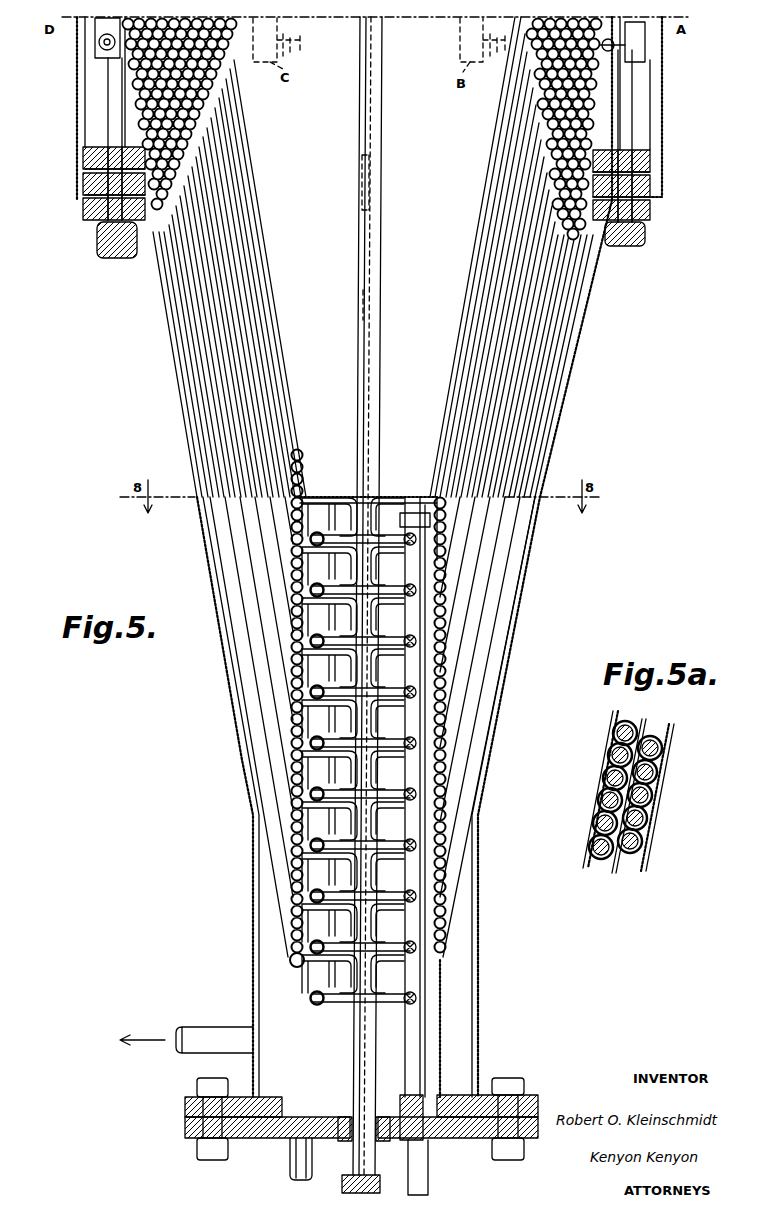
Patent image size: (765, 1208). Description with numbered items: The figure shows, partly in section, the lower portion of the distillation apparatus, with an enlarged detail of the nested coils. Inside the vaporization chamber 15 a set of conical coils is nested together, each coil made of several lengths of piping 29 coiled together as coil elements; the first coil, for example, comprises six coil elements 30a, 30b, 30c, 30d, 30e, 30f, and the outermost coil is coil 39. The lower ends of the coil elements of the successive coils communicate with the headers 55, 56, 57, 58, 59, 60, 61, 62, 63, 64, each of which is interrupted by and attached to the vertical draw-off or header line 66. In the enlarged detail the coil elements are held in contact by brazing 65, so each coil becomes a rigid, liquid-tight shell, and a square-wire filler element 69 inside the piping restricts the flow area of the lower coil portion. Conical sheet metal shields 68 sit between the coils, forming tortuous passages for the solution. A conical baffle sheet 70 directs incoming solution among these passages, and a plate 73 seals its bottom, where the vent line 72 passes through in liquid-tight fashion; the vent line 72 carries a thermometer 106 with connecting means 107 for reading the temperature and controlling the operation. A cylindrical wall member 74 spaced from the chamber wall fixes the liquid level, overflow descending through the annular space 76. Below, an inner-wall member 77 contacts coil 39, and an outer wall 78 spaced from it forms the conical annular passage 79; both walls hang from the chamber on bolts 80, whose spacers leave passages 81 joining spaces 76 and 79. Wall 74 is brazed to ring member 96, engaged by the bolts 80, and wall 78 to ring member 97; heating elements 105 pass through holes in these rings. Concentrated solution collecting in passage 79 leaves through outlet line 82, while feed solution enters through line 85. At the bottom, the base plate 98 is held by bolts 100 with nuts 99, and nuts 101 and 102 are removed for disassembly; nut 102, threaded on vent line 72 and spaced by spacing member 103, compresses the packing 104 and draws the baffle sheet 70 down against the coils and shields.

In FIG. 5, the vaporization chamber 15 is at (663, 99).
In FIG. 5A, the piping 29 is at (620, 726).
In FIG. 5, the coil element 30a is at (300, 450).
In FIG. 5, the coil element 30b is at (300, 462).
In FIG. 5, the coil element 30c is at (300, 474).
In FIG. 5, the coil element 30d is at (300, 486).
In FIG. 5, the coil element 30e is at (301, 498).
In FIG. 5, the coil element 30f is at (302, 510).
In FIG. 5, the conical coil 39 is at (135, 82).
In FIG. 5, the header 55 is at (312, 540).
In FIG. 5, the header 56 is at (312, 591).
In FIG. 5, the header 57 is at (312, 642).
In FIG. 5, the header 58 is at (312, 693).
In FIG. 5, the header 59 is at (312, 744).
In FIG. 5, the header 60 is at (312, 795).
In FIG. 5, the header 61 is at (312, 846).
In FIG. 5, the header 62 is at (312, 896).
In FIG. 5, the header 63 is at (312, 947).
In FIG. 5, the header 64 is at (312, 998).
In FIG. 5A, the brazing 65 is at (614, 770).
In FIG. 5, the vertical draw-off or header line 66 is at (413, 1022).
In FIG. 5, the conically-shaped sheet metal spacing means (shield) 68 is at (205, 428).
In FIG. 5A, the conically-shaped sheet metal spacing means (shield) 68 is at (655, 796).
In FIG. 5A, the filler element 69 is at (668, 735).
In FIG. 5, the baffle sheet 70 is at (478, 238).
In FIG. 5, the vent line 72 is at (382, 122).
In FIG. 5, the plate 73 is at (390, 497).
In FIG. 5, the cylindrical wall member 74 is at (652, 95).
In FIG. 5, the annular space 76 is at (660, 62).
In FIG. 5, the inner-wall member 77 is at (563, 346).
In FIG. 5, the outer wall 78 is at (558, 387).
In FIG. 5, the annular conically-shaped passage 79 is at (553, 414).
In FIG. 5, the bolt 80 is at (622, 232).
In FIG. 5, the passage 81 is at (640, 180).
In FIG. 5, the outlet line 82 is at (200, 1030).
In FIG. 5, the line 85 is at (294, 1160).
In FIG. 5, the ring member 96 is at (628, 150).
In FIG. 5, the ring member 97 is at (652, 209).
In FIG. 5, the base plate 98 is at (464, 1138).
In FIG. 5, the nut 99 is at (524, 1150).
In FIG. 5, the bolt 100 is at (528, 1095).
In FIG. 5, the nut 101 is at (426, 1150).
In FIG. 5, the nut 102 is at (345, 1186).
In FIG. 5, the spacing member 103 is at (345, 1160).
In FIG. 5, the packing 104 is at (343, 1120).
In FIG. 5, the heating element 105 is at (125, 118).
In FIG. 5, the thermometer 106 is at (361, 178).
In FIG. 5, the connecting means 107 is at (363, 303).